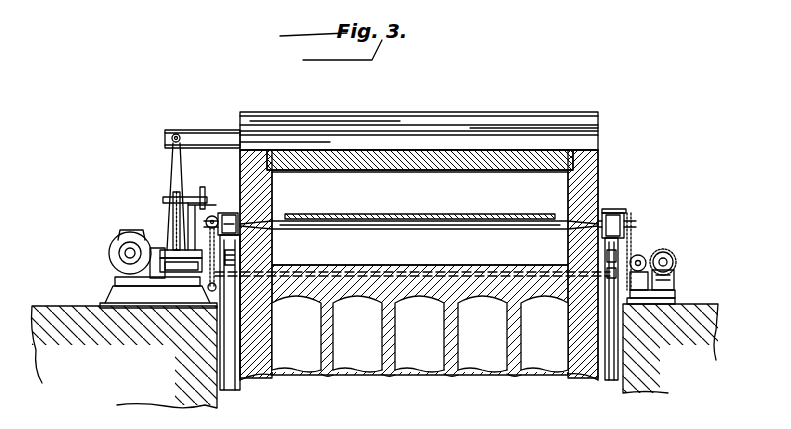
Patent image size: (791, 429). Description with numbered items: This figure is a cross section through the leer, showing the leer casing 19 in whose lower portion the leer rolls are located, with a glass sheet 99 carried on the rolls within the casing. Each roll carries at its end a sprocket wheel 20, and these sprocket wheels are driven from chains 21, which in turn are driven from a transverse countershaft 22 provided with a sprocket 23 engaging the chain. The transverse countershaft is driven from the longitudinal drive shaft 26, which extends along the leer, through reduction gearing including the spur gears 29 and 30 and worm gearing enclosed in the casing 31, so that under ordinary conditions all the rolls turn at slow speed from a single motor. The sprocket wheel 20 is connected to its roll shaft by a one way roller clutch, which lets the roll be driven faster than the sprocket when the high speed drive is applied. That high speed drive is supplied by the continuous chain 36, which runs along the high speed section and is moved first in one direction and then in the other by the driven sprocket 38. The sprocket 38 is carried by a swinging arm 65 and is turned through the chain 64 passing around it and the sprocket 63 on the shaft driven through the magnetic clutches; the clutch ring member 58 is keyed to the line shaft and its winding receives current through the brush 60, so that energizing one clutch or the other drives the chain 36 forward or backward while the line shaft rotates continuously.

The leer casing 19 is at (540, 155).
The sprocket wheel 20 is at (233, 148).
The chain 21 is at (216, 213).
The transverse countershaft 22 is at (552, 273).
The sprocket 23 is at (207, 285).
The longitudinal drive shaft 26 is at (640, 257).
The spur gear 29 is at (637, 257).
The spur gear 30 is at (668, 253).
The worm gearing casing 31 is at (675, 263).
The high speed chain 36 is at (208, 218).
The driven sprocket 38 is at (203, 205).
The clutch ring member 58 is at (150, 240).
The brush 60 is at (118, 243).
The sprocket 63 is at (187, 282).
The chain 64 is at (167, 208).
The swinging arm 65 is at (168, 160).
The glass sheet 99 is at (463, 217).